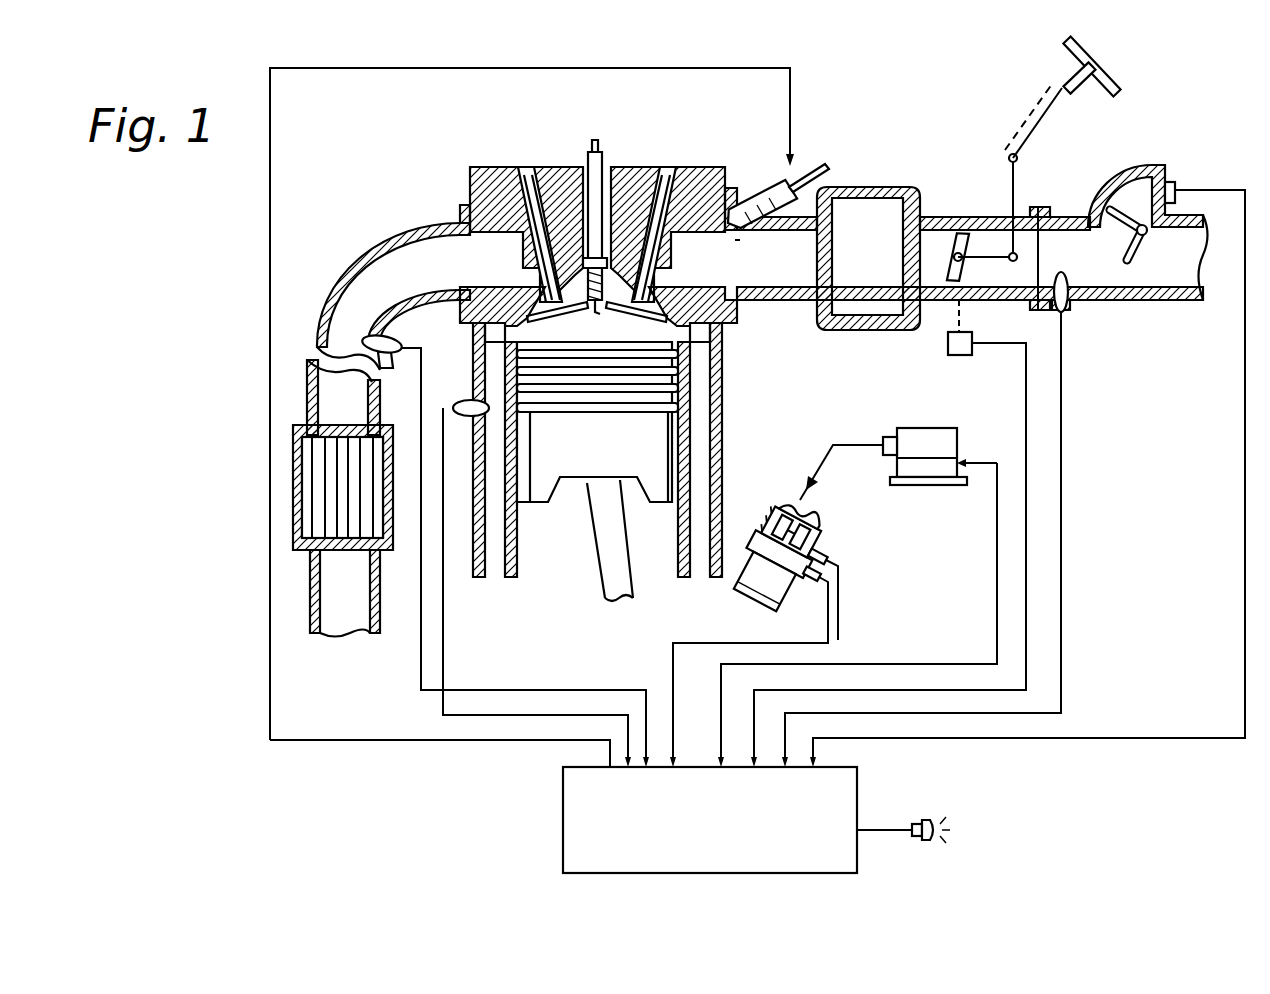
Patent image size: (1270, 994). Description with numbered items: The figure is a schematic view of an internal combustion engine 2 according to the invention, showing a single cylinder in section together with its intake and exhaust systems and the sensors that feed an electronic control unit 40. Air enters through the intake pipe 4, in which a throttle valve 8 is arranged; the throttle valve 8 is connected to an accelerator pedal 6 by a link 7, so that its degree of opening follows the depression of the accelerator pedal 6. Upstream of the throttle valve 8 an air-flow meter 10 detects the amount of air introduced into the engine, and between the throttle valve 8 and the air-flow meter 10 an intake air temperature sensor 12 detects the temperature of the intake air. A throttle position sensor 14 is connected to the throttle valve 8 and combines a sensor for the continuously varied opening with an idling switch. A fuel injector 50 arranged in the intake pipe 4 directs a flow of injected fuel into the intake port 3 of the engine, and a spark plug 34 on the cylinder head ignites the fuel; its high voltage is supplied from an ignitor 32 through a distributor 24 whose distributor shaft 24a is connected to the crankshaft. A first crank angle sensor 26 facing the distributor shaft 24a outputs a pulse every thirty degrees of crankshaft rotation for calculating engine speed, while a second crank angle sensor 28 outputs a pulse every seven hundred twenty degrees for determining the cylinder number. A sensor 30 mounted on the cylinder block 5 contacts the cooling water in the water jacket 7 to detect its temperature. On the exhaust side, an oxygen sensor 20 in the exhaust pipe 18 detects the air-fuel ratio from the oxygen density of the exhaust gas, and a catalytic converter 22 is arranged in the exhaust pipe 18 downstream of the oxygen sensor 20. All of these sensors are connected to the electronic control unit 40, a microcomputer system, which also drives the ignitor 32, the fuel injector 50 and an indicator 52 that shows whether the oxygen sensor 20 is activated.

The internal combustion engine 2 is at (585, 180).
The intake port 3 is at (713, 270).
The intake pipe 4 is at (930, 216).
The cylinder block 5 is at (475, 528).
The accelerator pedal 6 is at (1112, 70).
The link 7 is at (502, 515).
The throttle valve 8 is at (967, 232).
The air-flow meter 10 is at (1172, 184).
The intake air temperature sensor 12 is at (1070, 312).
The throttle position sensor 14 is at (948, 345).
The exhaust pipe 18 is at (408, 222).
The oxygen sensor 20 is at (396, 362).
The catalytic converter 22 is at (313, 513).
The distributor 24 is at (795, 500).
The distributor shaft 24a is at (768, 510).
The first crank angle sensor 26 is at (816, 584).
The second crank angle sensor 28 is at (828, 556).
The cooling water temperature sensor 30 is at (456, 400).
The ignitor 32 is at (940, 484).
The spark plug 34 is at (603, 220).
The electronic control unit 40 is at (860, 777).
The fuel injector 50 is at (777, 203).
The indicator 52 is at (929, 841).